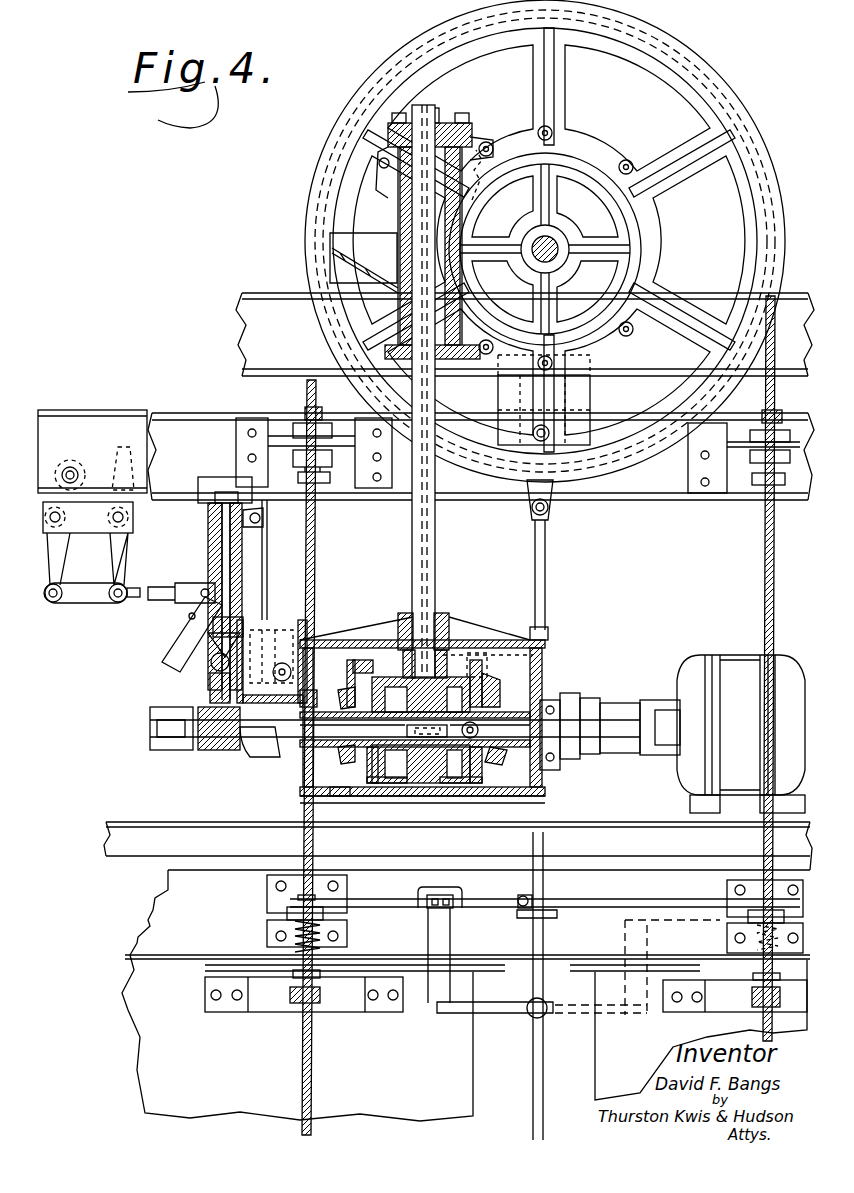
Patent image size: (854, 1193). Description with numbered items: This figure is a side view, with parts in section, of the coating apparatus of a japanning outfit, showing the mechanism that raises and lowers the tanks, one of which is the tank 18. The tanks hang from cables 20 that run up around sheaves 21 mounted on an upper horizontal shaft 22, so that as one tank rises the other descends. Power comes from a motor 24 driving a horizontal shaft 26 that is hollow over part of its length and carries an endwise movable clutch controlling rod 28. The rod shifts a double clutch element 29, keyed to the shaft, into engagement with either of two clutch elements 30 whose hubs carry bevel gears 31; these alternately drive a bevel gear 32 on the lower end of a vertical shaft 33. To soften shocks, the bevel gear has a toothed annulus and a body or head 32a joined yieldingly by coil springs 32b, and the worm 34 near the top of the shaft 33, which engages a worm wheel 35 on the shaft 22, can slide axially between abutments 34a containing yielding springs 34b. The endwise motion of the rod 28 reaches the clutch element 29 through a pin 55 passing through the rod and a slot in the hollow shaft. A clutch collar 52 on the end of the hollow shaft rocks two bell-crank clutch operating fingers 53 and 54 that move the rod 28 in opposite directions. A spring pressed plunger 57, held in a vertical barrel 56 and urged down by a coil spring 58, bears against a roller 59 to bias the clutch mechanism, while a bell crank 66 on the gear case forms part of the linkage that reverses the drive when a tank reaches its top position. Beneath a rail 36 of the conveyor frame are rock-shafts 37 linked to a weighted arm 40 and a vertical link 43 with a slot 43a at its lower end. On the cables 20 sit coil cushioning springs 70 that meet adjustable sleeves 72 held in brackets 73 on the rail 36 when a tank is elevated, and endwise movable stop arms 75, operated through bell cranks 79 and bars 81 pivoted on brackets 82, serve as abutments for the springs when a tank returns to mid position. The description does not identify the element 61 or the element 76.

The tank 18 is at (466, 995).
The cables 20 is at (316, 568).
The sheaves 21 is at (694, 65).
The upper horizontal shaft 22 is at (552, 241).
The motor 24 is at (735, 668).
The horizontal shaft 26 is at (568, 716).
The clutch controlling rod 28 is at (352, 640).
The double clutch element 29 is at (428, 787).
The clutch elements 30 is at (375, 787).
The bevel gears 31 is at (496, 768).
The bevel gear 32 is at (347, 698).
The body or head 32a is at (442, 615).
The coil springs 32b is at (402, 615).
The vertical shaft 33 is at (437, 552).
The worm 34 is at (402, 233).
The abutments 34a is at (378, 190).
The yielding springs 34b is at (488, 157).
The worm wheel 35 is at (462, 211).
The rail 36 is at (100, 410).
The rock-shafts 37 is at (115, 522).
The weighted arm 40 is at (178, 630).
The vertical link 43 is at (267, 605).
The slot 43a is at (260, 625).
The clutch collar 52 is at (215, 750).
The clutch operating finger 53 is at (193, 712).
The clutch operating finger 54 is at (260, 757).
The pin 55 is at (422, 737).
The vertical barrel 56 is at (240, 560).
The plunger 57 is at (232, 580).
The coil spring 58 is at (243, 600).
The roller 59 is at (210, 668).
The guide 61 is at (135, 470).
The bell crank 66 is at (520, 662).
The coil cushioning springs 70 is at (285, 953).
The adjustable sleeves 72 is at (318, 488).
The brackets 73 is at (73, 462).
The stop arms 75 is at (290, 905).
The rod 76 is at (542, 1086).
The bell cranks 79 is at (681, 1010).
The bars 81 is at (484, 905).
The brackets 82 is at (552, 915).